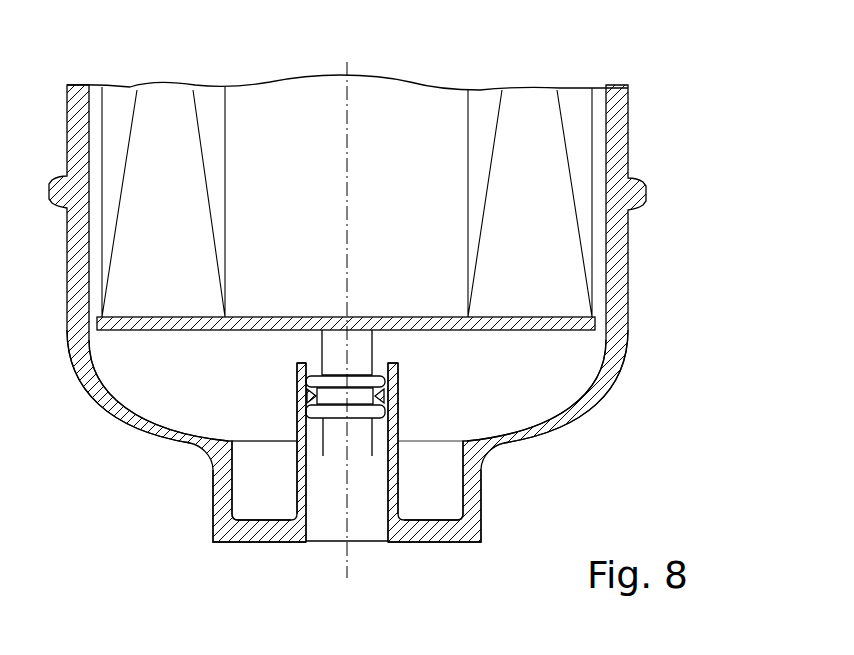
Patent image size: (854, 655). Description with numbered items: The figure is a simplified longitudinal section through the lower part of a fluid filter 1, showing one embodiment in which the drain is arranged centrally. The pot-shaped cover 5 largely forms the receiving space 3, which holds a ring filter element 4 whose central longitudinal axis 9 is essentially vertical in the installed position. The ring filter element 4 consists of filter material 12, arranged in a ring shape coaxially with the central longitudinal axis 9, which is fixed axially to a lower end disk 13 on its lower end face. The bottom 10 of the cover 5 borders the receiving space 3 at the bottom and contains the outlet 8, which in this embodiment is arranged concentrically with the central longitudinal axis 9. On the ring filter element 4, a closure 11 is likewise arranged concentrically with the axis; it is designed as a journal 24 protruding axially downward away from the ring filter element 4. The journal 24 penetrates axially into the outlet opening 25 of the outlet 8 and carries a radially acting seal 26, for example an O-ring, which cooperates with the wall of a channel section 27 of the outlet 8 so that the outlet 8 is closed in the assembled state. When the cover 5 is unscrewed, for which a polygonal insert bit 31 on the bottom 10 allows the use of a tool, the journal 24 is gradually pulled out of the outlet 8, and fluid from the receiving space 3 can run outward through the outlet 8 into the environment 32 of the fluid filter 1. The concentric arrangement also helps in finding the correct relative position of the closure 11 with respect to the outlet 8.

The fluid filter 1 is at (686, 110).
The receiving space 3 is at (505, 374).
The ring filter element 4 is at (534, 106).
The cover 5 is at (634, 276).
The outlet 8 is at (372, 525).
The central longitudinal axis 9 is at (347, 195).
The bottom 10 is at (519, 440).
The closure 11 is at (385, 347).
The filter material 12 is at (168, 100).
The lower end disk 13 is at (271, 317).
The journal 24 is at (324, 433).
The outlet opening 25 is at (310, 363).
The seal 26 is at (396, 400).
The channel section 27 is at (315, 513).
The polygonal insert bit 31 is at (484, 507).
The environment 32 is at (429, 607).